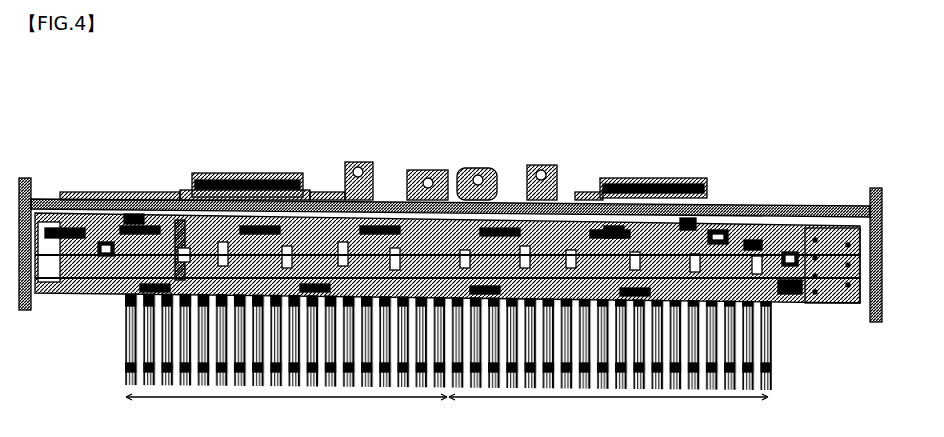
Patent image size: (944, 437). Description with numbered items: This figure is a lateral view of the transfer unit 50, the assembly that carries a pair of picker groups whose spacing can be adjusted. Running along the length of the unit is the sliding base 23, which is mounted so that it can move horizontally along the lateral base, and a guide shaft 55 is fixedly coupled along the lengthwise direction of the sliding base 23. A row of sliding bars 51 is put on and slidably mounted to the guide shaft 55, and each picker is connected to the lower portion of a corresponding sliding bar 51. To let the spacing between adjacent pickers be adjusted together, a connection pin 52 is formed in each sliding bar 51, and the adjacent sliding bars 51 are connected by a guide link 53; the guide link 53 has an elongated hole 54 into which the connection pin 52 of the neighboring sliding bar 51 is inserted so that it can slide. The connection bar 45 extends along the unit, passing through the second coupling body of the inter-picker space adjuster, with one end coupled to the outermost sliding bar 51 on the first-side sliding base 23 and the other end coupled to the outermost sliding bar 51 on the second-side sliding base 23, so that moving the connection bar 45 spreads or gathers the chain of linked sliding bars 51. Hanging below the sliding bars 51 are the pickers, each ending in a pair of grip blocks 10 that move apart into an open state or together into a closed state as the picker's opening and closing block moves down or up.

The transfer unit 50 is at (435, 91).
The grip blocks 10 is at (120, 333).
The connection bar 45 is at (106, 246).
The sliding bar 51 is at (132, 216).
The connection pin 52 is at (718, 233).
The guide link 53 is at (688, 220).
The elongated hole 54 is at (614, 228).
The sliding base 23 is at (830, 233).
The guide shaft 55 is at (790, 293).